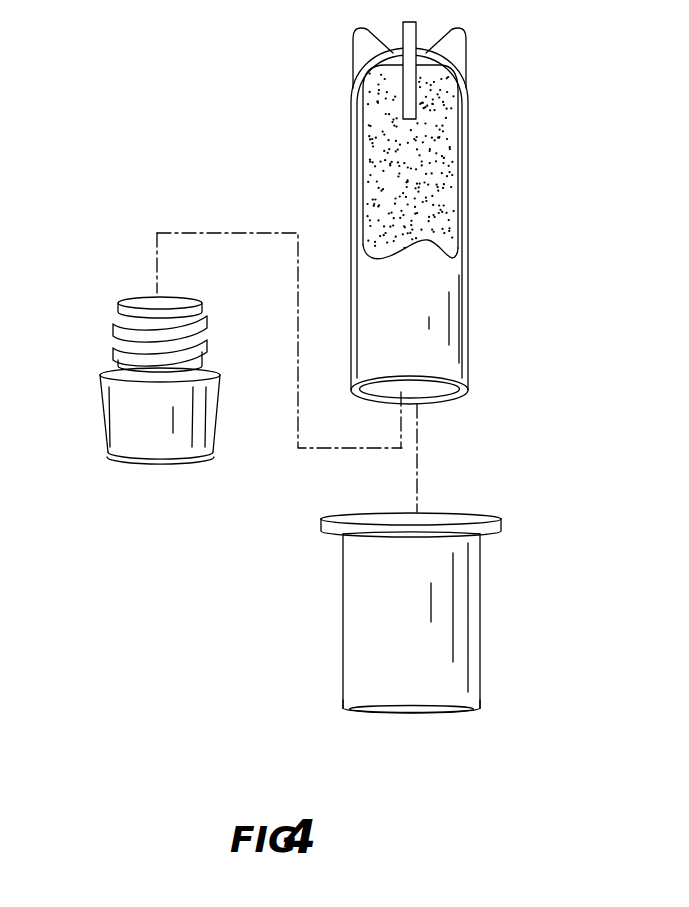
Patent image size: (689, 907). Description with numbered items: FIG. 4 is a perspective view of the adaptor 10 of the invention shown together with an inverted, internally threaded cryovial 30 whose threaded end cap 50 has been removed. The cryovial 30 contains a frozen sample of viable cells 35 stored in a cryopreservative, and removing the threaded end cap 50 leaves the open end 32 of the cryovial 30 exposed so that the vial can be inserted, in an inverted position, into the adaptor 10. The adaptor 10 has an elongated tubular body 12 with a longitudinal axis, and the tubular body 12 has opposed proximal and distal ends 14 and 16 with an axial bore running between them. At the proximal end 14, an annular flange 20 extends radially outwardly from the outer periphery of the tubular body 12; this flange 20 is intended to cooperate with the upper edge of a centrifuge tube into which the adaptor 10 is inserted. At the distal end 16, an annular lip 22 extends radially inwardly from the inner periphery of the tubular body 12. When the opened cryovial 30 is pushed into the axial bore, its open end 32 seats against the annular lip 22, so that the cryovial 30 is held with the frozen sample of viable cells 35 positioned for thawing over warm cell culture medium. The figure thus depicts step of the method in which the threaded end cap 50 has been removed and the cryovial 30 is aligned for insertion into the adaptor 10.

The adaptor 10 is at (443, 624).
The tubular body 12 is at (470, 688).
The proximal end 14 is at (355, 533).
The distal end 16 is at (355, 697).
The annular flange 20 is at (490, 522).
The annular lip 22 is at (457, 712).
The cryovial 30 is at (446, 226).
The open end 32 is at (460, 398).
The frozen sample of viable cells 35 is at (442, 163).
The threaded end cap 50 is at (120, 418).